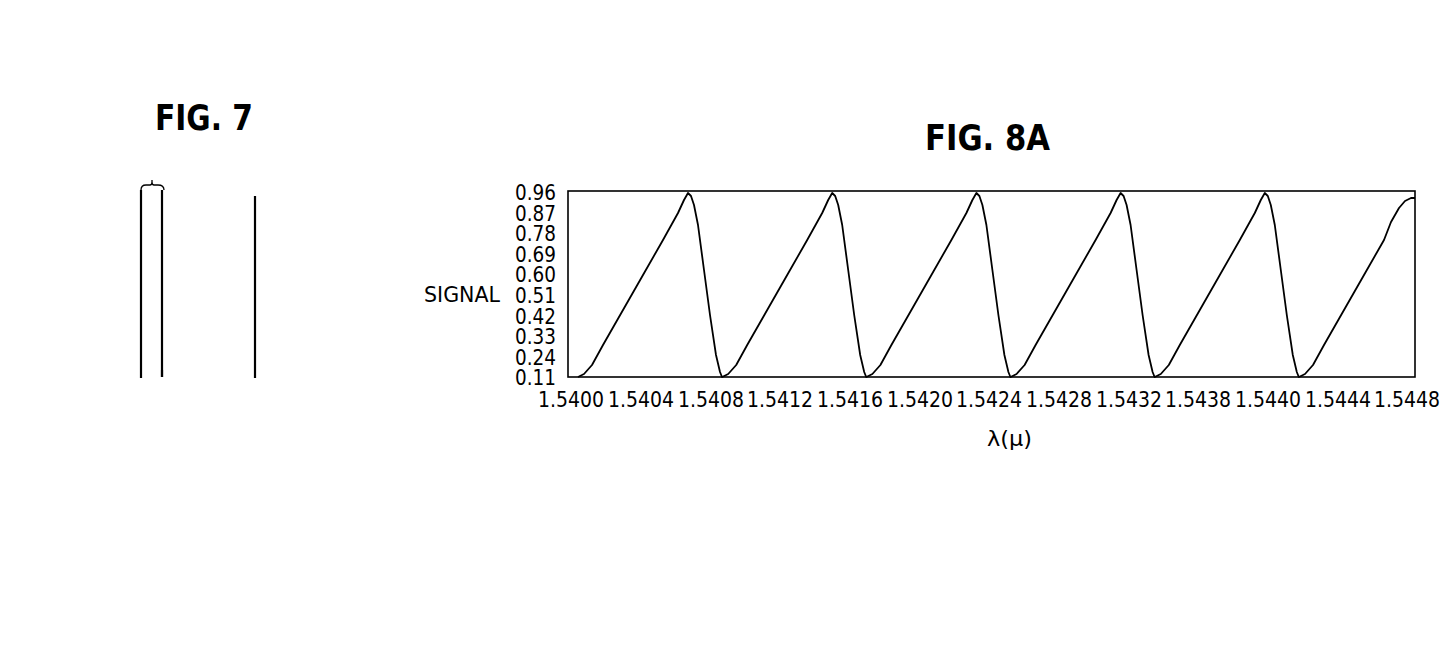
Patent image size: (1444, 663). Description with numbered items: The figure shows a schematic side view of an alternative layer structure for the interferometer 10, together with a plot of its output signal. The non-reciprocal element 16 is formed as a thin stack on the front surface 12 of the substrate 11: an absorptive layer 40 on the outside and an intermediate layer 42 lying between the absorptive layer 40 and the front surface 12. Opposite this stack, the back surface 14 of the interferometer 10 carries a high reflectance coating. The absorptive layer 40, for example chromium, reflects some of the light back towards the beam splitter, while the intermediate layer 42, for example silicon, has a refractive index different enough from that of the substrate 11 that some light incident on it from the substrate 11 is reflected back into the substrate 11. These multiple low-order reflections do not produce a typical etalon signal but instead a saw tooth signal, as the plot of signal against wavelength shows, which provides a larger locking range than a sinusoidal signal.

The interferometer 10 is at (212, 186).
The substrate 11 is at (212, 263).
The front surface 12 is at (169, 379).
The back surface 14 is at (255, 314).
The non-reciprocal element 16 is at (152, 172).
The absorptive layer 40 is at (141, 315).
The intermediate layer 42 is at (162, 348).